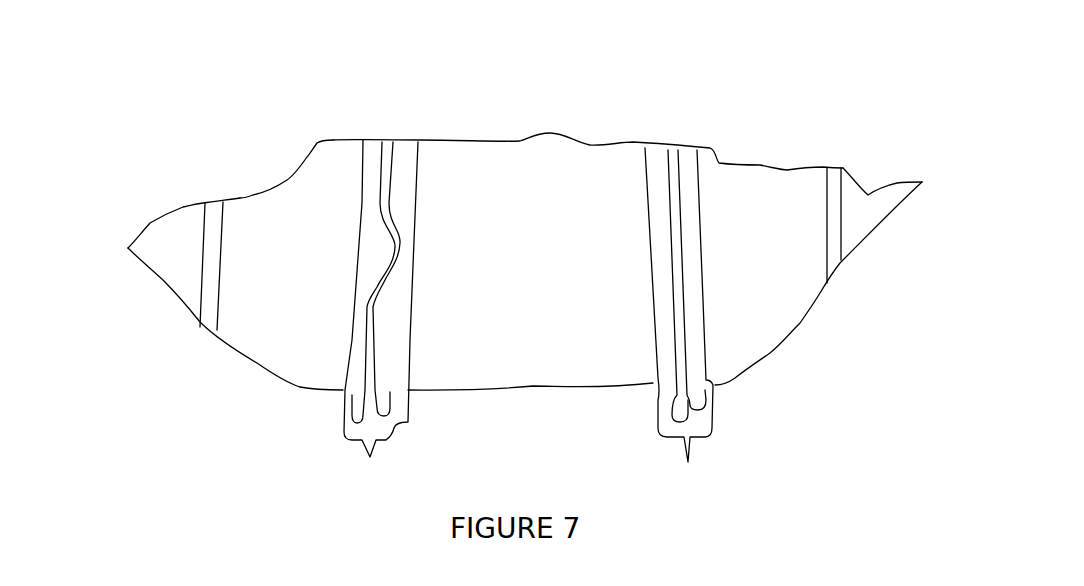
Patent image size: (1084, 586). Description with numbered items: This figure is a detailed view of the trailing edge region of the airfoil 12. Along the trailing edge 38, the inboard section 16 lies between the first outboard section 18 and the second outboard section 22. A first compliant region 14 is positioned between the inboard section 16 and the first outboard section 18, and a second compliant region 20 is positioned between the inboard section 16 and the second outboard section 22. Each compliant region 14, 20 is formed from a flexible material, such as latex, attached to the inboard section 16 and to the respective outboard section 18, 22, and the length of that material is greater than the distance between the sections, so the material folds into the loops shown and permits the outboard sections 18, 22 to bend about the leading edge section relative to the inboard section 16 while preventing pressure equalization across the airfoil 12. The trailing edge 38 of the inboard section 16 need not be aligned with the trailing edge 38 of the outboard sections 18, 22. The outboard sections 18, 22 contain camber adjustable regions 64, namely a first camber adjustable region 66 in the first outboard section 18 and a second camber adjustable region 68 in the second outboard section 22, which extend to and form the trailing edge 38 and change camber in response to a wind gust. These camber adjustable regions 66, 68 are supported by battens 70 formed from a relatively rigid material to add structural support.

The airfoil 12 is at (563, 90).
The first compliant region 14 is at (381, 322).
The inboard section 16 is at (583, 197).
The first outboard section 18 is at (150, 283).
The second compliant region 20 is at (679, 323).
The second outboard section 22 is at (818, 297).
The trailing edge 38 is at (290, 383).
The camber adjustable region 64 is at (292, 215).
The first camber adjustable region 66 is at (293, 332).
The second camber adjustable region 68 is at (803, 243).
The batten 70 is at (210, 290).